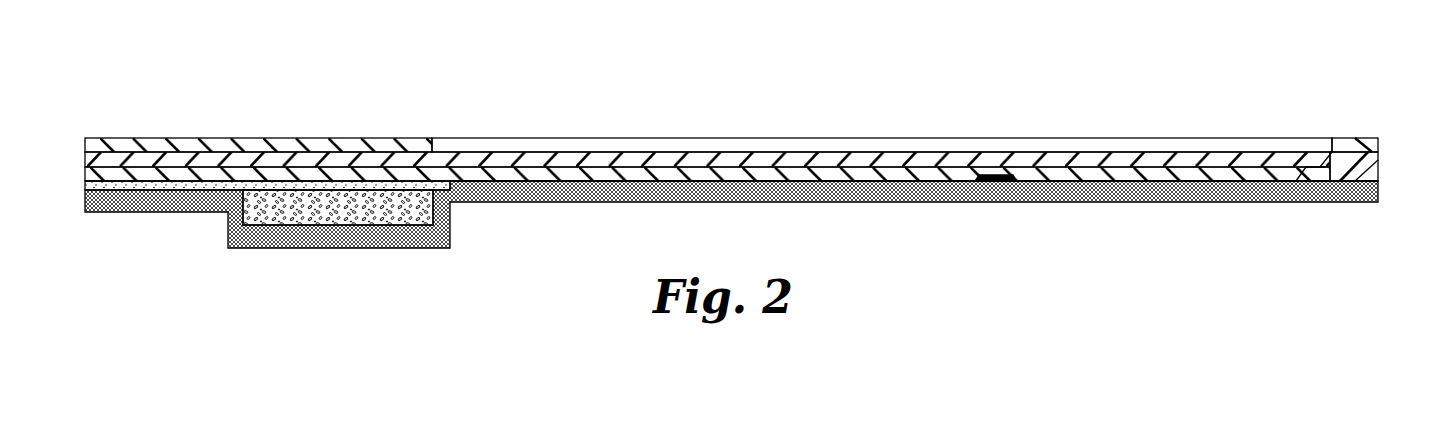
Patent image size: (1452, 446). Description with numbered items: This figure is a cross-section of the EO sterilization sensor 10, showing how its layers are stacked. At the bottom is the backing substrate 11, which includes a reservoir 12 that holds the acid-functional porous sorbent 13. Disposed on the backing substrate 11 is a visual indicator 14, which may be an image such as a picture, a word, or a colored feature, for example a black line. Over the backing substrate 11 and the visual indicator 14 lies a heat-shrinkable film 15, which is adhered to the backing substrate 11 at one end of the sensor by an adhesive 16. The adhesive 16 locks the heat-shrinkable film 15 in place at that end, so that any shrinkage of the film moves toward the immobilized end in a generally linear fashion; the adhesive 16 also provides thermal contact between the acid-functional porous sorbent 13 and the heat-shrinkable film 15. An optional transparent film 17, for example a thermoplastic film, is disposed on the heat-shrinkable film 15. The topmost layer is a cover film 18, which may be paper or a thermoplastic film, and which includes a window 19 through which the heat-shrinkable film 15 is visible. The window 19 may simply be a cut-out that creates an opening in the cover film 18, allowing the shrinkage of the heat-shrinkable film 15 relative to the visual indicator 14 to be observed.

The EO sterilization sensor 10 is at (1363, 83).
The backing substrate 11 is at (1170, 192).
The reservoir 12 is at (358, 226).
The acid-functional porous sorbent 13 is at (304, 210).
The visual indicator 14 is at (989, 176).
The heat-shrinkable film 15 is at (865, 176).
The adhesive 16 is at (132, 183).
The transparent film 17 is at (670, 160).
The cover film 18 is at (313, 147).
The window 19 is at (498, 145).